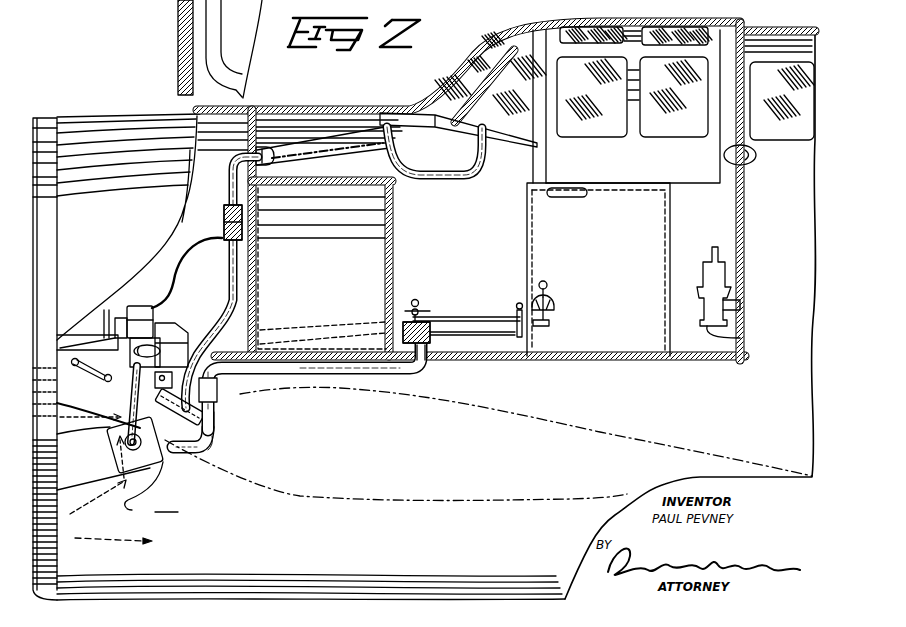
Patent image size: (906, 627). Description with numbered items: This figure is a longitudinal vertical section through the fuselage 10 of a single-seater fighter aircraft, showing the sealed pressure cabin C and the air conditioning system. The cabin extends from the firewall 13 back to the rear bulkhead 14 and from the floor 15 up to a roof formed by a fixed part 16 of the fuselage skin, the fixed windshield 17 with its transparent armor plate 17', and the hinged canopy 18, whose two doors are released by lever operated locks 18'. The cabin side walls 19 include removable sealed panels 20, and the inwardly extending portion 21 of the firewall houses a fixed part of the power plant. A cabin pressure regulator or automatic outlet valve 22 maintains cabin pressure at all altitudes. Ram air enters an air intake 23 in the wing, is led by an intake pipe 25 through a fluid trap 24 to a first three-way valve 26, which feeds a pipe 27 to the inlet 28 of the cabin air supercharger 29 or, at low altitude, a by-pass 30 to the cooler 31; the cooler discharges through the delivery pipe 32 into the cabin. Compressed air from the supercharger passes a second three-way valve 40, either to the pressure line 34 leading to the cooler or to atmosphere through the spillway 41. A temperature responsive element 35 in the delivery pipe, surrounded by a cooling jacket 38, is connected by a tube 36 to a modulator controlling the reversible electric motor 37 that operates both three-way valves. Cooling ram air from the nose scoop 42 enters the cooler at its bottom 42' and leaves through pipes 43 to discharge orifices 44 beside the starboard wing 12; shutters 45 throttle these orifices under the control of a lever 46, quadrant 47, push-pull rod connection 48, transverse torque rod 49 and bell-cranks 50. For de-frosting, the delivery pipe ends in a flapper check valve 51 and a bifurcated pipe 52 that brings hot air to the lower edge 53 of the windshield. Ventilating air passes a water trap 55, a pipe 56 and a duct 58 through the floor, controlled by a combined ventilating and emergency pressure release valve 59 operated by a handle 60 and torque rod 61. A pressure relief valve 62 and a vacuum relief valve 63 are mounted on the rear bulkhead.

The fuselage 10 is at (424, 315).
The starboard wing 12 is at (366, 497).
The firewall 13 is at (248, 138).
The rear bulkhead 14 is at (746, 215).
The floor 15 is at (520, 359).
The fixed part of the fuselage skin 16 is at (316, 110).
The windshield 17 is at (468, 106).
The transparent armor plate 17' is at (492, 86).
The hinged canopy 18 is at (680, 105).
The lever operated locks 18' is at (579, 199).
The cabin side walls 19 is at (464, 227).
The removable sealed panels 20 is at (598, 269).
The inwardly extending portion of the fire wall 21 is at (322, 268).
The cabin pressure regulator or automatic outlet valve 22 is at (704, 273).
The air intake 23 is at (178, 46).
The fluid trap 24 is at (222, 446).
The intake pipe 25 is at (215, 411).
The first three-way valve 26 is at (180, 406).
The pipe 27 is at (216, 362).
The inlet of the cabin air supercharger 28 is at (158, 372).
The cabin air supercharger 29 is at (168, 324).
The by-pass 30 is at (140, 446).
The cooler 31 is at (117, 452).
The delivery pipe 32 is at (224, 183).
The pressure line 34 is at (133, 395).
The temperature responsive element 35 is at (223, 231).
The tube 36 is at (183, 262).
The reversible electric motor 37 is at (140, 308).
The cooling jacket 38 is at (223, 213).
The second three-way valve 40 is at (140, 327).
The spillway 41 is at (147, 351).
The nose scoop 42 is at (129, 544).
The cooler ram air inlet 42' is at (124, 488).
The pipes 43 is at (82, 430).
The discharge orifices 44 is at (103, 335).
The shutters 45 is at (87, 345).
The control lever 46 is at (547, 281).
The quadrant 47 is at (557, 308).
The push-pull rod connection 48 is at (478, 311).
The transverse torque rod 49 is at (106, 382).
The bell-cranks 50 is at (92, 370).
The check valve 51 is at (273, 160).
The bifurcated pipe 52 is at (428, 178).
The lower edge of the windshield 53 is at (530, 146).
The water trap 55 is at (218, 388).
The pipe 56 is at (276, 368).
The duct 58 is at (426, 366).
The combined ventilating and emergency pressure release valve 59 is at (432, 335).
The handle 60 is at (515, 308).
The torque rod 61 is at (471, 337).
The pressure relief valve 62 is at (725, 156).
The vacuum relief valve 63 is at (757, 156).